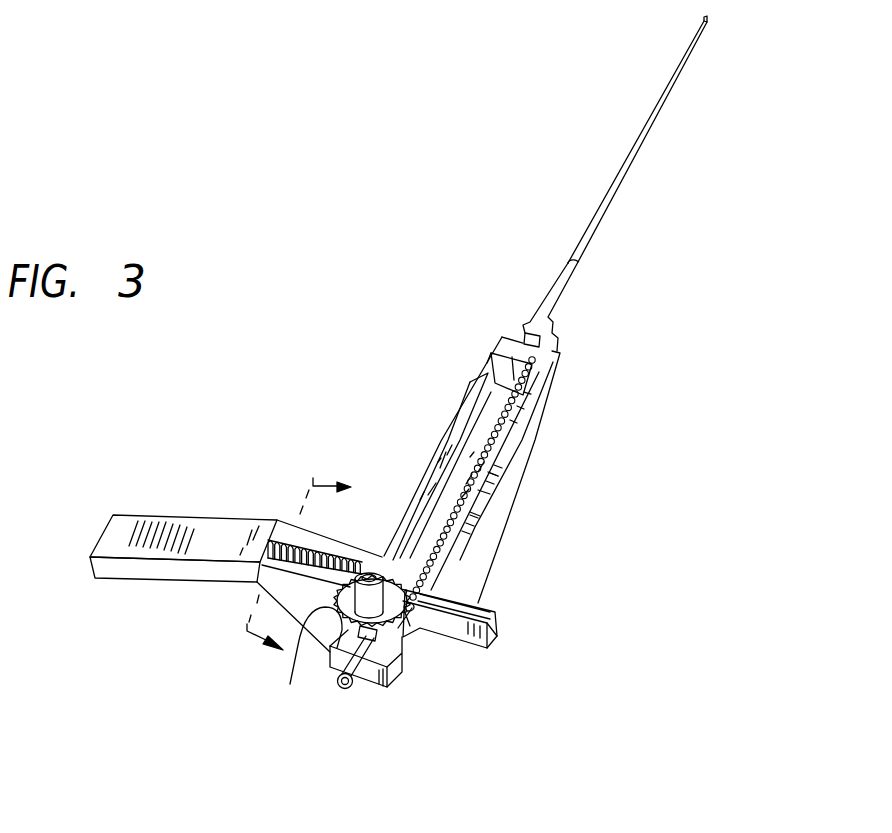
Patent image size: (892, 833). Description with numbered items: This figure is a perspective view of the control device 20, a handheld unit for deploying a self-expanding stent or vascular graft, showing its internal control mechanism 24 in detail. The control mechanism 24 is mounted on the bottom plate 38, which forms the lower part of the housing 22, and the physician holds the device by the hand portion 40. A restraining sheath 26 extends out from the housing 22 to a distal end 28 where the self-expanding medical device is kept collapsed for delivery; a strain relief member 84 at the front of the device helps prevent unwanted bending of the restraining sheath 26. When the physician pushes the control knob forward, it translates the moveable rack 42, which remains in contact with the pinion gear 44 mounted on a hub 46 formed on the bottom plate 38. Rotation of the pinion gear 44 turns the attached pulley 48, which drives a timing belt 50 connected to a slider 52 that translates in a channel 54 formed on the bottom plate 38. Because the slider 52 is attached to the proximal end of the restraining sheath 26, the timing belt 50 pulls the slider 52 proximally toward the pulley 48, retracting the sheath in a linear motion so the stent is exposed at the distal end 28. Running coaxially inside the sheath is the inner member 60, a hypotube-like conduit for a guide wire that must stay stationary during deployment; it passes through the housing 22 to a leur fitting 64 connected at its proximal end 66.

The control device 20 is at (549, 507).
The housing 22 is at (562, 374).
The control mechanism 24 is at (442, 592).
The restraining sheath 26 is at (644, 162).
The distal end 28 is at (692, 54).
The bottom plate 38 is at (117, 572).
The hand portion 40 is at (196, 523).
The moveable rack 42 is at (290, 540).
The pinion gear 44 is at (291, 684).
The hub 46 is at (370, 574).
The pulley 48 is at (410, 612).
The timing belt 50 is at (494, 436).
The slider 52 is at (512, 360).
The channel 54 is at (465, 427).
The inner member 60 is at (474, 454).
The leur fitting 64 is at (372, 686).
The proximal end 66 is at (405, 645).
The strain relief member 84 is at (571, 298).